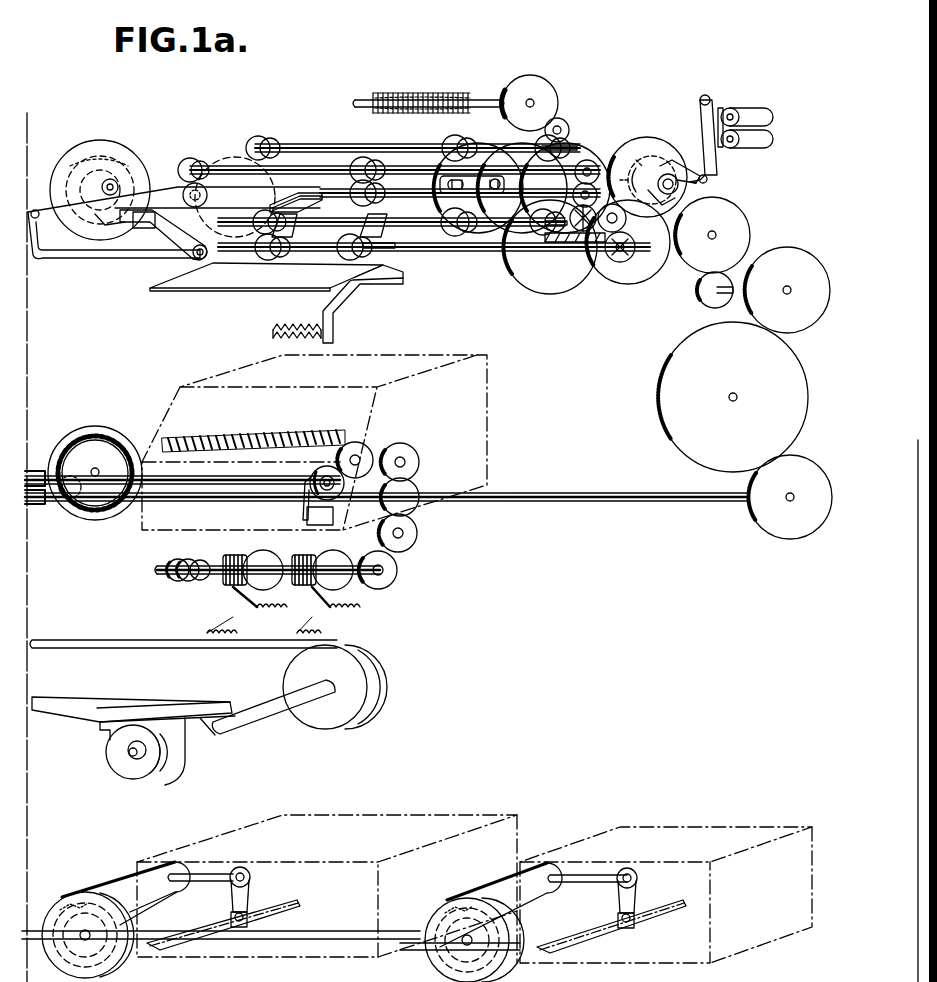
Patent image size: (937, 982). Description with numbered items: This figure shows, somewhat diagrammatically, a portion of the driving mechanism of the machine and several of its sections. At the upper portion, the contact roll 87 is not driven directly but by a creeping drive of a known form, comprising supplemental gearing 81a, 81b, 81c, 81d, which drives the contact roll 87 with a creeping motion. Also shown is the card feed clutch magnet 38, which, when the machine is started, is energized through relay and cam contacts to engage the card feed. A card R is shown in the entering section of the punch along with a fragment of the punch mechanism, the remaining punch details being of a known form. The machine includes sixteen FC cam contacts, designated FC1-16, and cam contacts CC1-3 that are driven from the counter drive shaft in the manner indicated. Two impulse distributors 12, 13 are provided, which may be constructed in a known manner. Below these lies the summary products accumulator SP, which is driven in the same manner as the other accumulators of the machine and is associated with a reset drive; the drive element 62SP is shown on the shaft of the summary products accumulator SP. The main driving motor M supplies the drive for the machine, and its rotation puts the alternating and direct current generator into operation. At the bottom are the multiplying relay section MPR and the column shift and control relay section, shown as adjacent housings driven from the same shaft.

The contact roll 87 is at (258, 160).
The FC cam contacts FC1-16 is at (475, 94).
The supplemental gearing 81d is at (493, 157).
The supplemental gearing 81a is at (587, 153).
The supplemental gearing 81c is at (555, 265).
The supplemental gearing 81b is at (637, 268).
The card feed clutch magnet 38 is at (755, 112).
The card R is at (213, 280).
The summary products accumulator SP is at (314, 442).
The impulse distributor 13 is at (250, 552).
The clutch 62SP is at (327, 520).
The impulse distributor 12 is at (323, 550).
The cam contacts CC1-3 is at (200, 580).
The main driving motor M is at (138, 767).
The multiplying relay section MPR is at (327, 889).